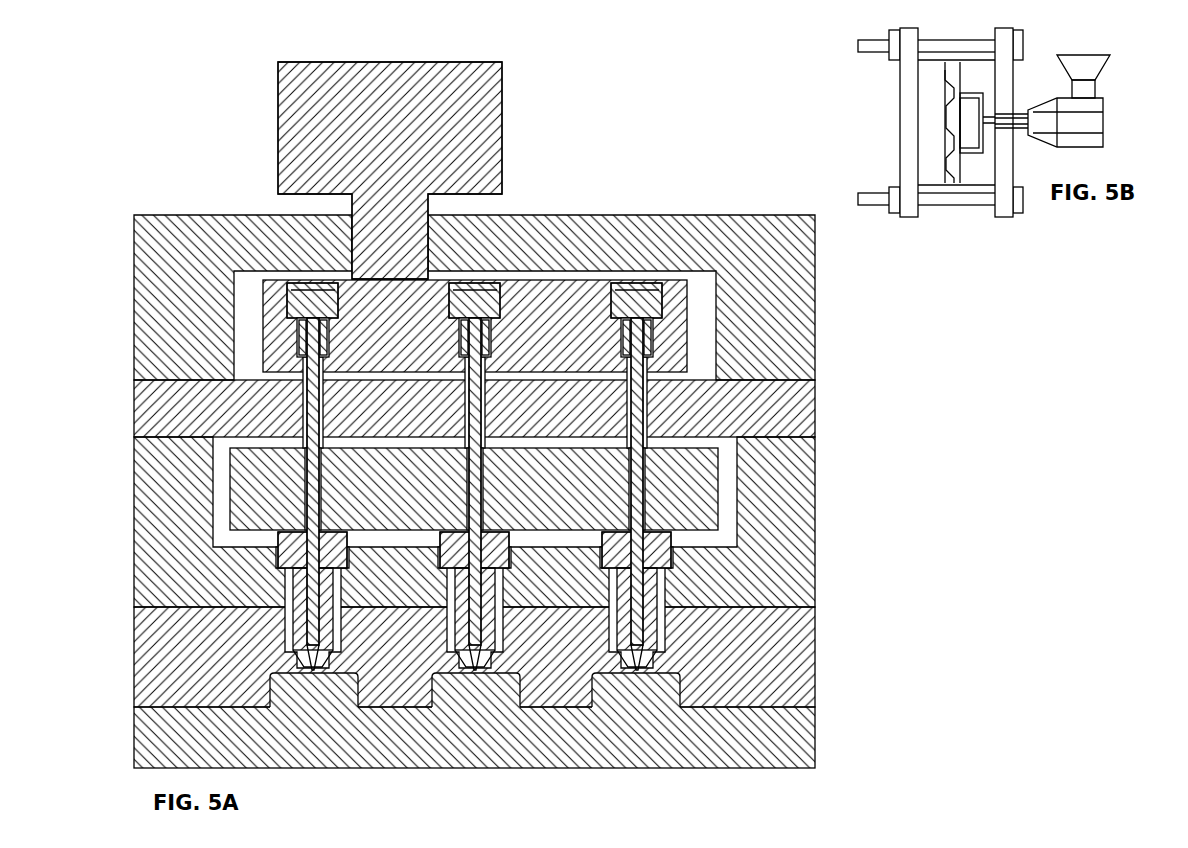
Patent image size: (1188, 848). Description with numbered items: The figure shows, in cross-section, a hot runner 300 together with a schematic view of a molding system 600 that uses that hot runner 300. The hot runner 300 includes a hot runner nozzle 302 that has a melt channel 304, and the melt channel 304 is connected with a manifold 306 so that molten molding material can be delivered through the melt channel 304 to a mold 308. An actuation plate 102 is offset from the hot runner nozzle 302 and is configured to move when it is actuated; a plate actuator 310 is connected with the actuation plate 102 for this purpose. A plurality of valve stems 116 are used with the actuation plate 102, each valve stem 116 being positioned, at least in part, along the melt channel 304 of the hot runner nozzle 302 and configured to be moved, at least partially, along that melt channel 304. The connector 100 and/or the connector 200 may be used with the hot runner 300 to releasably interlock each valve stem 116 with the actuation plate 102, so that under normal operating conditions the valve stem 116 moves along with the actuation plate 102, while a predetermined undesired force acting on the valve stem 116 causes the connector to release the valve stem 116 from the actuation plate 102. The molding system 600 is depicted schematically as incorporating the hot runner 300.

In FIG. 5A, the hot runner 300 is at (518, 436).
In FIG. 5B, the hot runner 300 is at (962, 173).
In FIG. 5A, the plate actuator 310 is at (502, 125).
In FIG. 5A, the connector 100 is at (518, 408).
In FIG. 5A, the connector 200 is at (300, 340).
In FIG. 5A, the actuation plate 102 is at (688, 362).
In FIG. 5A, the valve stem 116 is at (643, 460).
In FIG. 5A, the manifold 306 is at (718, 517).
In FIG. 5A, the melt channel 304 is at (647, 613).
In FIG. 5A, the hot runner nozzle 302 is at (658, 633).
In FIG. 5A, the mold 308 is at (797, 768).
In FIG. 5B, the molding system 600 is at (951, 150).